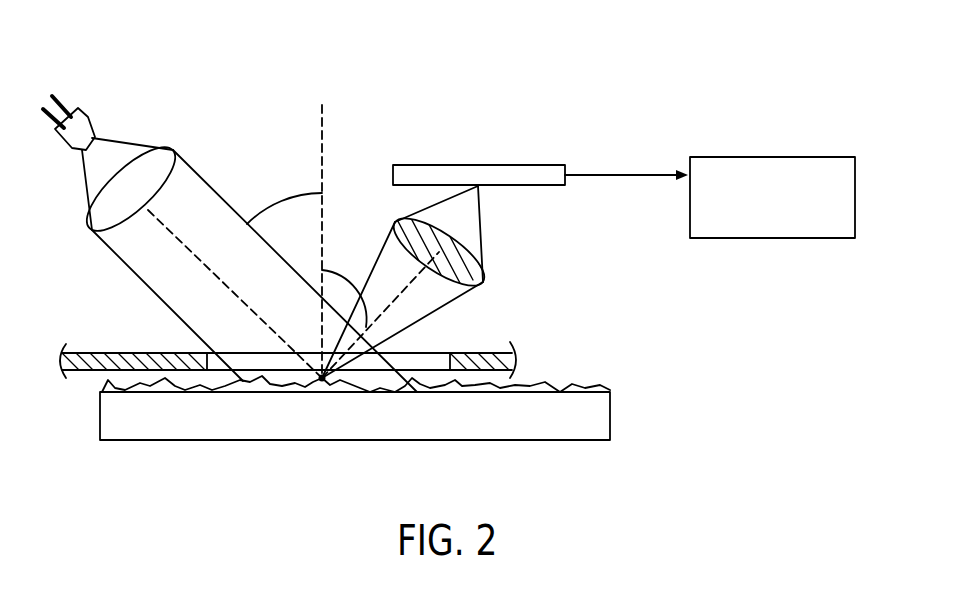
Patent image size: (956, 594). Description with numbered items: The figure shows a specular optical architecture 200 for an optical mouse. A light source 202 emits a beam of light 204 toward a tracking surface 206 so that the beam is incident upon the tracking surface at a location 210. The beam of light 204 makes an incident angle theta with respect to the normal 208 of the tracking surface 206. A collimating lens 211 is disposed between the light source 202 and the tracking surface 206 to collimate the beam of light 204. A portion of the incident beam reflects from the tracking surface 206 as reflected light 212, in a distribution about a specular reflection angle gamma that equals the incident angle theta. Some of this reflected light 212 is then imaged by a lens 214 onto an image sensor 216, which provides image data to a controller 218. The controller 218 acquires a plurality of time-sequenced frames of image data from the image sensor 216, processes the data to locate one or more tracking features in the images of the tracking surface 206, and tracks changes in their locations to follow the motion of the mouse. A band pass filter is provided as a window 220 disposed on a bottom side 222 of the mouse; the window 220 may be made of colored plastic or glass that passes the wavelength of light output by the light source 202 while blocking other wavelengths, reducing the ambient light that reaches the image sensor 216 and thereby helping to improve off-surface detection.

The optical architecture 200 is at (544, 88).
The light source 202 is at (80, 125).
The beam of light 204 is at (210, 186).
The tracking surface 206 is at (560, 392).
The normal 208 is at (323, 132).
The location 210 is at (322, 380).
The collimating lens 211 is at (162, 160).
The reflected light 212 is at (430, 302).
The lens 214 is at (472, 275).
The image sensor 216 is at (460, 165).
The controller 218 is at (768, 157).
The window 220 is at (262, 375).
The bottom side 222 is at (85, 372).